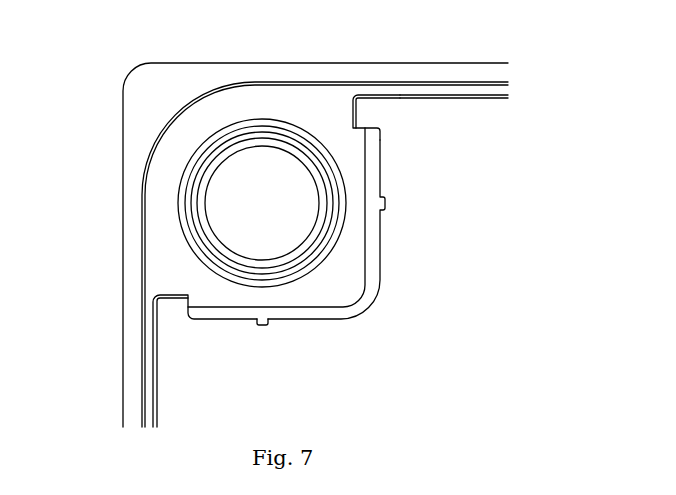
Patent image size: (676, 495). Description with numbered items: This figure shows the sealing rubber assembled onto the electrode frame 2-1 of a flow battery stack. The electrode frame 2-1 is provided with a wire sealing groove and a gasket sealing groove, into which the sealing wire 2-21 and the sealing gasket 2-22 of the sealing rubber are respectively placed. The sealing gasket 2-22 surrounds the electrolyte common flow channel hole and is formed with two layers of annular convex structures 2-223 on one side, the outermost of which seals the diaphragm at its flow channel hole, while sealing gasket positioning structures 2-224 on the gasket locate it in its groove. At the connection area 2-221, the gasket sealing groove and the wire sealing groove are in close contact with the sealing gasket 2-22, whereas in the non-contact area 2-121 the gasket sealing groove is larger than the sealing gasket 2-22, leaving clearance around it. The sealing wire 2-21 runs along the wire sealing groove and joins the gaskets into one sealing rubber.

The electrode frame 2-1 is at (147, 88).
The sealing wire 2-21 is at (443, 90).
The sealing gasket 2-22 is at (257, 102).
The non-contact area of the gasket sealing groove and the wire sealing groove 2-121 is at (372, 240).
The connection area of the gasket sealing groove and the wire sealing groove 2-221 is at (345, 98).
The annular convex structure 2-223 is at (308, 268).
The sealing gasket positioning structure 2-224 is at (263, 325).